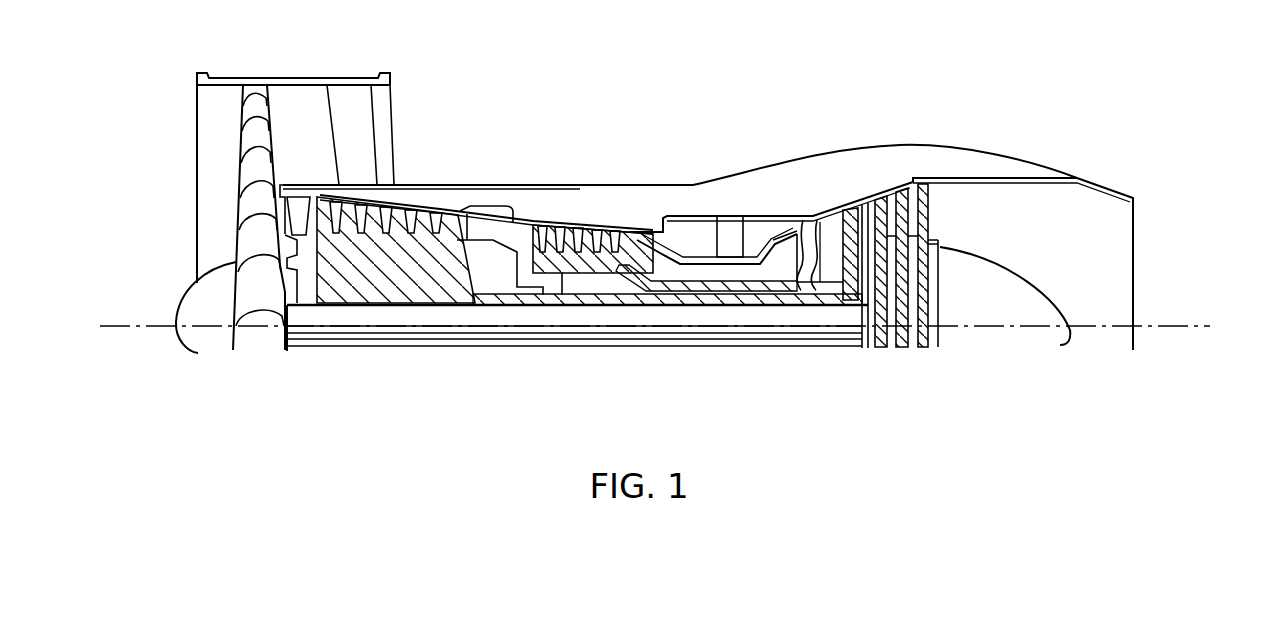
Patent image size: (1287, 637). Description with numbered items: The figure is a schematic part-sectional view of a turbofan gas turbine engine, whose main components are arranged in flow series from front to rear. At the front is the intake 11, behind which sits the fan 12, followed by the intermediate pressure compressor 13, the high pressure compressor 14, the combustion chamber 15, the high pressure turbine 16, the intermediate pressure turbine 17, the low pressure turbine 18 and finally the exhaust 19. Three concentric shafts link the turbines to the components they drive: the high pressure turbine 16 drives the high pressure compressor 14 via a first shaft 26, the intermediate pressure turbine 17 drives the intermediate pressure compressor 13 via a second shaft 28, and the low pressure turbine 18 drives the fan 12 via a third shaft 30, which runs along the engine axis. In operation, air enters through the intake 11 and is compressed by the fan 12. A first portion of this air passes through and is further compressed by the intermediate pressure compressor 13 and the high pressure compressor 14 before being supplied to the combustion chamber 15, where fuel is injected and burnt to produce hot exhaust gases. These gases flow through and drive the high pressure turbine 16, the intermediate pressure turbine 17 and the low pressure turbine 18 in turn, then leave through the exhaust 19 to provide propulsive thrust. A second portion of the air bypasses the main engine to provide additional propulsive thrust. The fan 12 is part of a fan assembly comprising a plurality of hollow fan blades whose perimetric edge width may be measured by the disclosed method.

The intake 11 is at (210, 156).
The fan 12 is at (262, 108).
The intermediate pressure compressor 13 is at (393, 247).
The high pressure compressor 14 is at (588, 214).
The combustion chamber 15 is at (700, 233).
The high pressure turbine 16 is at (812, 214).
The intermediate pressure turbine 17 is at (845, 212).
The low pressure turbine 18 is at (923, 208).
The exhaust 19 is at (1083, 210).
The first shaft 26 is at (780, 280).
The second shaft 28 is at (604, 291).
The third shaft 30 is at (518, 315).